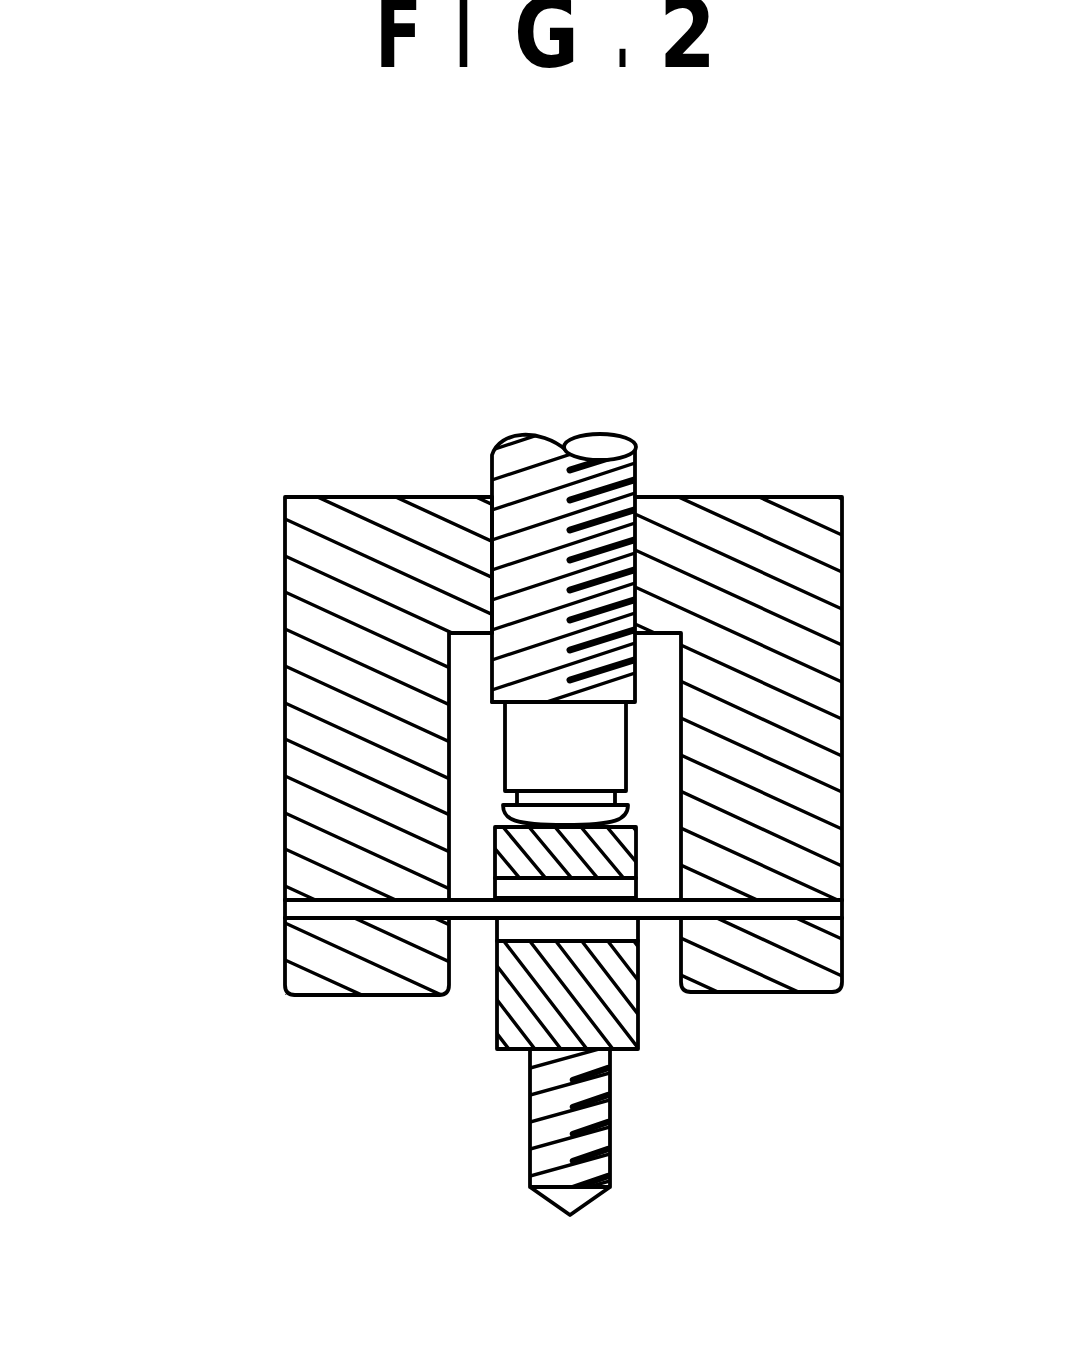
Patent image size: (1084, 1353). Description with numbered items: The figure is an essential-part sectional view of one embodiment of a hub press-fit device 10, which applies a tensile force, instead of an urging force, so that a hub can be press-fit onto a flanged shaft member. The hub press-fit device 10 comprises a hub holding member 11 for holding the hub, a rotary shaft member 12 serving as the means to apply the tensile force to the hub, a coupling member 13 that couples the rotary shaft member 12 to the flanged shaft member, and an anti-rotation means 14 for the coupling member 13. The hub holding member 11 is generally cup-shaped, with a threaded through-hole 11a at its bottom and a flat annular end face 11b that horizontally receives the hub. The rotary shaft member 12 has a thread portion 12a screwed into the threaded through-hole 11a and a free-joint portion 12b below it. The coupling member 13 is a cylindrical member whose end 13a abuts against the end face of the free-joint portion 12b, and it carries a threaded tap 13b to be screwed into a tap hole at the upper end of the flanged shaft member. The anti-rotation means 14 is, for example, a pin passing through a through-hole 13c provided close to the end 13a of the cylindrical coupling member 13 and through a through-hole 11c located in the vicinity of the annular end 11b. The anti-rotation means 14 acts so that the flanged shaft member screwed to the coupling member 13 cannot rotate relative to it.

The hub press-fit device 10 is at (236, 485).
The hub holding member 11 is at (777, 669).
The threaded through-hole 11a is at (490, 580).
The flat annular end face 11b is at (402, 996).
The through-hole 11c is at (358, 920).
The rotary shaft member 12 is at (620, 548).
The thread portion 12a is at (672, 622).
The free-joint portion 12b is at (537, 770).
The coupling member 13 is at (547, 997).
The end 13a is at (580, 855).
The threaded tap 13b is at (530, 1105).
The through-hole 13c is at (603, 932).
The anti-rotation means 14 is at (387, 908).